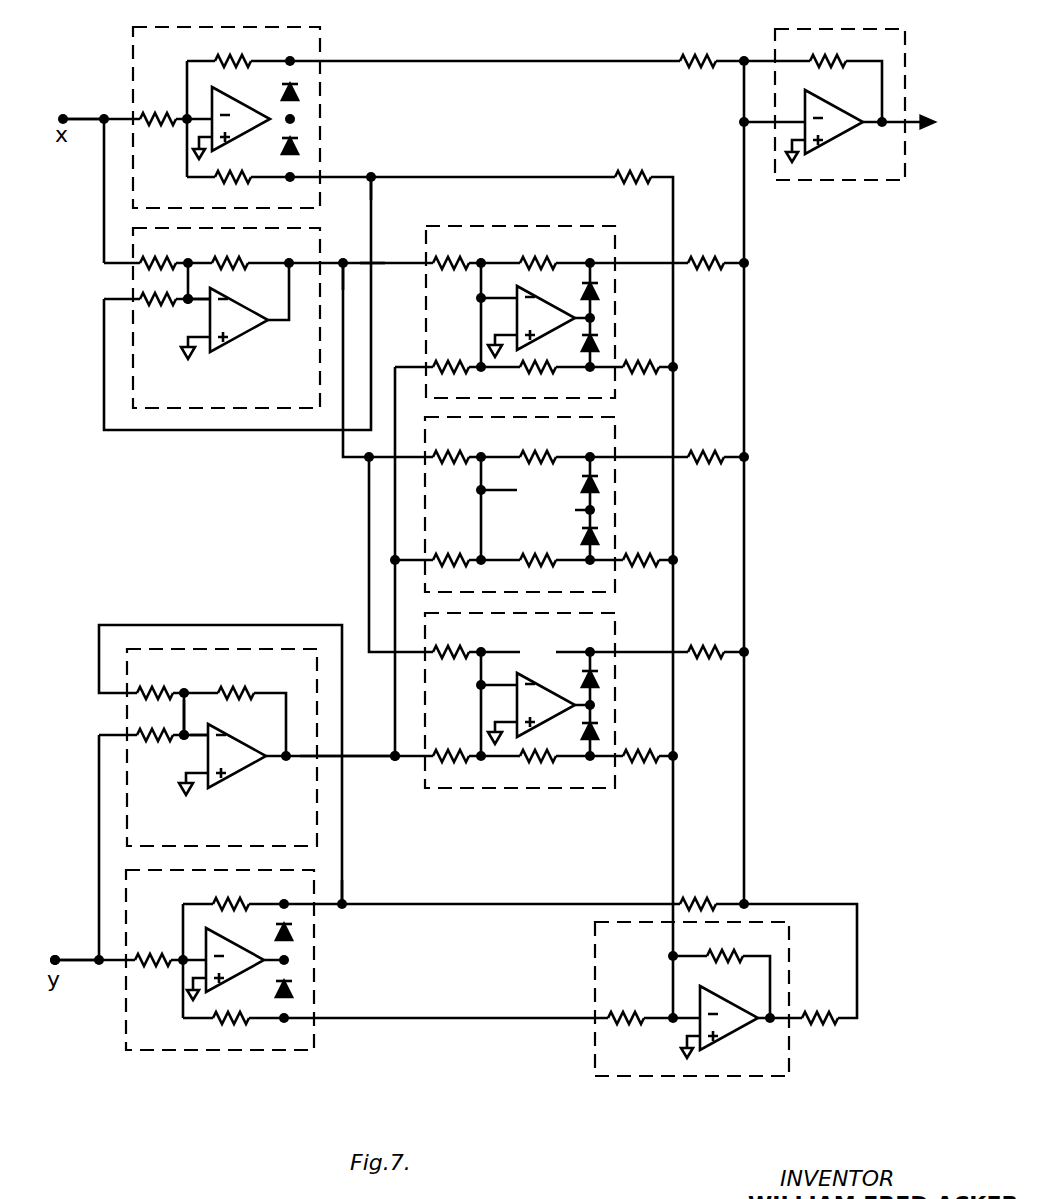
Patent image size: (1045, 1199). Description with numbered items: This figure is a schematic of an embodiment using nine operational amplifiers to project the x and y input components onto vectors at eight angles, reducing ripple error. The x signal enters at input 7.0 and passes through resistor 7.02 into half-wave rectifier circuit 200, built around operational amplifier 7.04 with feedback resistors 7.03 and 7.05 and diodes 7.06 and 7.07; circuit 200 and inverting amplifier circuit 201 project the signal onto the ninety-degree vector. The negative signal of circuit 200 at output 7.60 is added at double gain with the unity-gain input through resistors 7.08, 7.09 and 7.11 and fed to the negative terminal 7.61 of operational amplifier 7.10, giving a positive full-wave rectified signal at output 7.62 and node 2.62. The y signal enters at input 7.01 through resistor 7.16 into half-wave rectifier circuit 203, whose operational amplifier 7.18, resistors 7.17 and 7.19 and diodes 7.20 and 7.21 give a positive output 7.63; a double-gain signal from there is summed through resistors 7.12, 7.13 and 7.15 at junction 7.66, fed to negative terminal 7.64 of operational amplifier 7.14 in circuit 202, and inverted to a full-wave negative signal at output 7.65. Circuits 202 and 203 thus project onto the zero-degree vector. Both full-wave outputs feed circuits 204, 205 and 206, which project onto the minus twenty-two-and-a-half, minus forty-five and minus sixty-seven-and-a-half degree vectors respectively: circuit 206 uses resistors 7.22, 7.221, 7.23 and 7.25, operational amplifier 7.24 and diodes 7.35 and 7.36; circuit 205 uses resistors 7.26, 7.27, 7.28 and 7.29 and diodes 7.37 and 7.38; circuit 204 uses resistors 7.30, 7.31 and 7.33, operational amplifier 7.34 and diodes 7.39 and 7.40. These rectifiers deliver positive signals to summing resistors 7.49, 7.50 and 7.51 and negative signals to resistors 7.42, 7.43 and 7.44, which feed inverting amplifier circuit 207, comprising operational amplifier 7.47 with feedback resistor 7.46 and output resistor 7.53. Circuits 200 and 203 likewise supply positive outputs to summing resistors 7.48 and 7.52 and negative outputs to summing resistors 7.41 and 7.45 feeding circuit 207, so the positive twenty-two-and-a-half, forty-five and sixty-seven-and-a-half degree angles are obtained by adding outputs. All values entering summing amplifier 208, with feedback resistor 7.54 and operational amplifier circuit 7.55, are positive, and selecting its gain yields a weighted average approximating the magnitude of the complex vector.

The half-wave rectifier circuit 200 is at (305, 27).
The inverting operational amplifier circuit 201 is at (258, 409).
The circuit 202 is at (233, 649).
The half-wave rectifier circuit 203 is at (262, 1051).
The circuit 204 is at (614, 630).
The circuit 205 is at (615, 447).
The circuit 206 is at (612, 232).
The inverting amplifier circuit 207 is at (652, 1077).
The summing amplifier 208 is at (860, 181).
The junction node 2.62 is at (343, 261).
The x input terminal 7.0 is at (104, 118).
The y input terminal 7.01 is at (55, 958).
The impedance 7.02 is at (152, 118).
The impedance 7.03 is at (230, 60).
The operational amplifier 7.04 is at (262, 98).
The impedance 7.05 is at (228, 177).
The diode 7.06 is at (300, 92).
The diode 7.07 is at (300, 146).
The impedance 7.08 is at (158, 262).
The impedance 7.09 is at (235, 262).
The operational amplifier 7.10 is at (244, 336).
The impedance 7.11 is at (162, 302).
The impedance 7.12 is at (170, 691).
The impedance 7.13 is at (242, 691).
The operational amplifier 7.14 is at (239, 775).
The impedance 7.15 is at (160, 738).
The impedance 7.16 is at (150, 963).
The impedance 7.17 is at (225, 902).
The operational amplifier 7.18 is at (245, 975).
The impedance 7.19 is at (220, 1020).
The diode 7.20 is at (294, 932).
The diode 7.21 is at (294, 989).
The impedance 7.22 is at (452, 262).
The impedance 7.221 is at (453, 366).
The impedance 7.23 is at (545, 262).
The operational amplifier 7.24 is at (553, 331).
The impedance 7.25 is at (522, 368).
The impedance 7.26 is at (455, 456).
The impedance 7.27 is at (548, 456).
The impedance 7.28 is at (450, 559).
The impedance 7.29 is at (545, 562).
The impedance 7.30 is at (455, 651).
The impedance 7.31 is at (448, 754).
The impedance 7.33 is at (526, 759).
The operational amplifier 7.34 is at (548, 723).
The diode 7.35 is at (598, 291).
The diode 7.36 is at (598, 343).
The diode 7.37 is at (598, 485).
The diode 7.38 is at (598, 537).
The diode 7.39 is at (598, 680).
The diode 7.40 is at (598, 732).
The summing resistor 7.41 is at (634, 176).
The resistor 7.42 is at (643, 369).
The resistor 7.43 is at (642, 562).
The resistor 7.44 is at (640, 760).
The summing resistor 7.45 is at (626, 1020).
The impedance 7.46 is at (725, 955).
The operational amplifier 7.47 is at (735, 1036).
The summing resistor 7.48 is at (697, 60).
The summing resistor 7.49 is at (708, 262).
The summing resistor 7.50 is at (708, 455).
The summing resistor 7.51 is at (708, 650).
The summing resistor 7.52 is at (697, 902).
The impedance 7.53 is at (820, 1017).
The impedance 7.54 is at (838, 60).
The operational amplifier circuit 7.55 is at (847, 135).
The output 7.60 is at (373, 176).
The negative terminal 7.61 is at (200, 299).
The output 7.62 is at (371, 262).
The positive output 7.63 is at (343, 903).
The negative terminal 7.64 is at (204, 734).
The output 7.65 is at (300, 755).
The junction 7.66 is at (182, 732).